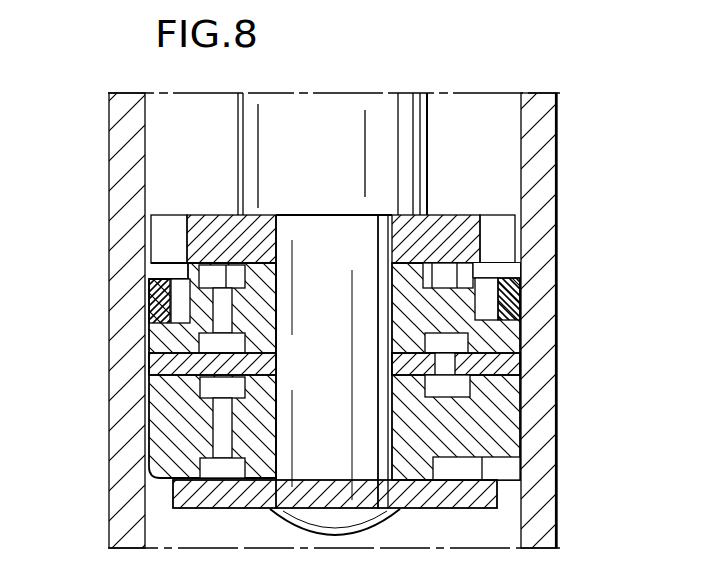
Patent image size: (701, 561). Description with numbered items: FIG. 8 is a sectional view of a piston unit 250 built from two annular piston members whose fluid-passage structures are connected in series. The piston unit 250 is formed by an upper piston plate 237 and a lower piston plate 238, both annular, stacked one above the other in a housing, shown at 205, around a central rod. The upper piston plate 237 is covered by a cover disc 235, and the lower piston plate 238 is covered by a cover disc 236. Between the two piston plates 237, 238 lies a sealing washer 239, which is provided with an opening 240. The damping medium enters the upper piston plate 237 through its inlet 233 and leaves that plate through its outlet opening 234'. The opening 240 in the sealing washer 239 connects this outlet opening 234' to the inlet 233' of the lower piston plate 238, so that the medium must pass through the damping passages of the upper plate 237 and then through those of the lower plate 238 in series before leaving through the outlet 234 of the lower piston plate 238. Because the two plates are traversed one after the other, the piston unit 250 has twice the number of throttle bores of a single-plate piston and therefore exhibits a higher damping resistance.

The cylinder housing 205 is at (163, 491).
The inlet 233 is at (544, 232).
The inlet 233' is at (521, 397).
The outlet 234 is at (525, 481).
The outlet opening 234' is at (519, 332).
The cover disc 235 is at (448, 230).
The cover disc 236 is at (470, 505).
The upper piston plate 237 is at (460, 303).
The lower piston plate 238 is at (500, 430).
The sealing washer 239 is at (148, 363).
The opening 240 is at (447, 365).
The piston unit 250 is at (171, 437).